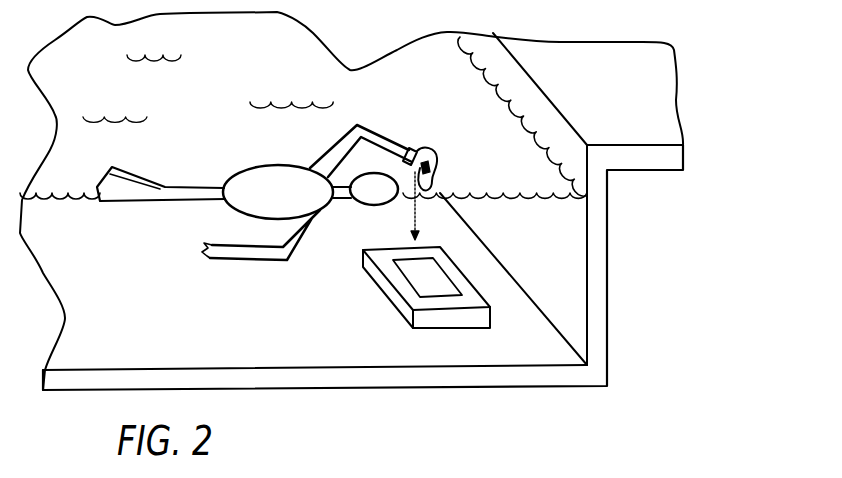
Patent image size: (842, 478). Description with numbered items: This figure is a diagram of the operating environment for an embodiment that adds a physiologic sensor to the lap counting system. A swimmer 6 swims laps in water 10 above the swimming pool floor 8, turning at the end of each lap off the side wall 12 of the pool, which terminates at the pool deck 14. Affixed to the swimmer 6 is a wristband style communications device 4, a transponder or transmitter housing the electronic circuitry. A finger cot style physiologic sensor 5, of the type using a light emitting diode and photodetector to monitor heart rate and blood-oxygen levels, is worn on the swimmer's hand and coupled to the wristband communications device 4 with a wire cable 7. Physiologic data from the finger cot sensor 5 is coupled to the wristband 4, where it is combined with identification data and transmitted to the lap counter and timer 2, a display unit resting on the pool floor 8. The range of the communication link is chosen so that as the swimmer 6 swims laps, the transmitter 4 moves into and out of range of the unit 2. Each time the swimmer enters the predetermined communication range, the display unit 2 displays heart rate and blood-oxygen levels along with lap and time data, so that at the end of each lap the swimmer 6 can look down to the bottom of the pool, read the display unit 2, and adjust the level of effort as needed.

The lap counter and timer 2 is at (387, 275).
The communications device 4 is at (413, 165).
The finger cot style physiologic sensor 5 is at (428, 186).
The swimmer 6 is at (264, 165).
The wire cable 7 is at (437, 157).
The swimming pool floor 8 is at (463, 363).
The water 10 is at (78, 196).
The side wall 12 is at (592, 233).
The pool deck 14 is at (633, 145).